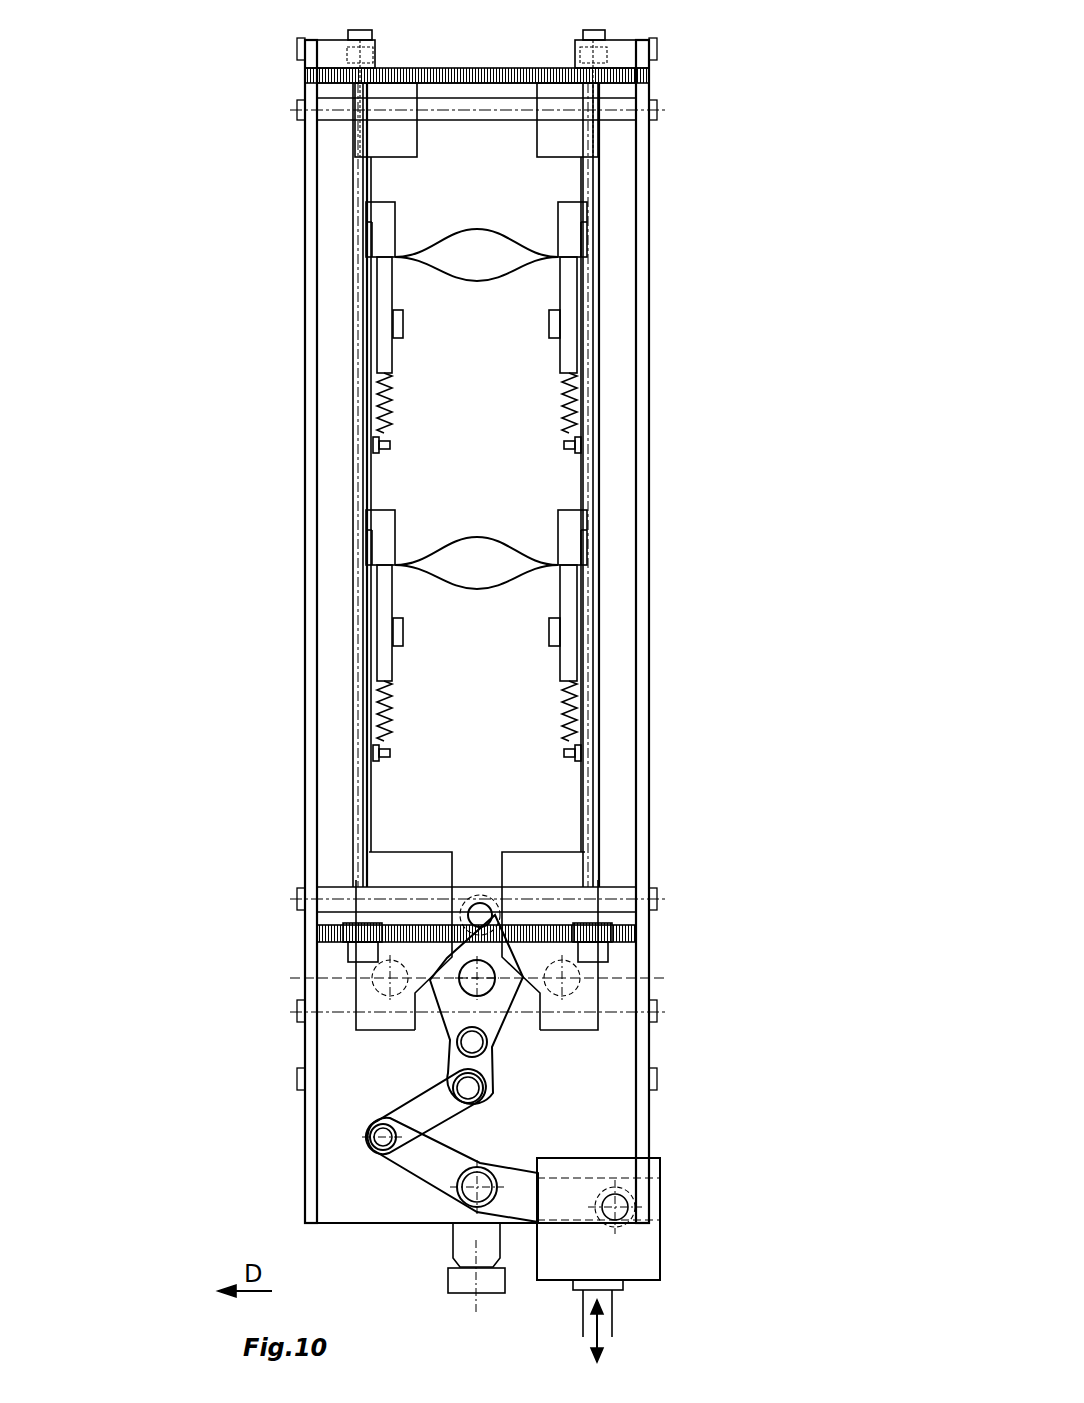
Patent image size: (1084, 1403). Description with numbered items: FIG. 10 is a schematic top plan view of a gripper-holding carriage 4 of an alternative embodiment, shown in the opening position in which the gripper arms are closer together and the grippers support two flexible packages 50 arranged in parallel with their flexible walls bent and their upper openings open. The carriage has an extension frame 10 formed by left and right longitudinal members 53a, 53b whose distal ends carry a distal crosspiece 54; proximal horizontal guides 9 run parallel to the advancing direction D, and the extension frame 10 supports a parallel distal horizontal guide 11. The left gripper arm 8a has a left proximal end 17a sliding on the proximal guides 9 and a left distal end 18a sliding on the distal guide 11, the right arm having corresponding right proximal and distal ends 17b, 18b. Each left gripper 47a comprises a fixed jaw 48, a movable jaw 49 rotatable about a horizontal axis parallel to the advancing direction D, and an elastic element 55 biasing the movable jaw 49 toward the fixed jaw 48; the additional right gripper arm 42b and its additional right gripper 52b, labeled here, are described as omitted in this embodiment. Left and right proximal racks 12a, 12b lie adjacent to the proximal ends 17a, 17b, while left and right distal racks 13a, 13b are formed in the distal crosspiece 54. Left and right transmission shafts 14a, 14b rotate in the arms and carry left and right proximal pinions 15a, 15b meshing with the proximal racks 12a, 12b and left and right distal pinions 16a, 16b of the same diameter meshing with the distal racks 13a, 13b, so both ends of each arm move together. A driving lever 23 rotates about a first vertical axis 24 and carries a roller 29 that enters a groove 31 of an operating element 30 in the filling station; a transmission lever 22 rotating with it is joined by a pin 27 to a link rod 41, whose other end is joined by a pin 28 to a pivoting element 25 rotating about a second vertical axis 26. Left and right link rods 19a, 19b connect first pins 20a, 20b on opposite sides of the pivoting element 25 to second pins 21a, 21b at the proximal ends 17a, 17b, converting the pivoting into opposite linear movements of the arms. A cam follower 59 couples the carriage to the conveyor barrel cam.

The gripper-holding carriage 4 is at (722, 246).
The left gripper arm 8a is at (375, 472).
The proximal horizontal guides 9 is at (640, 890).
The extension frame 10 is at (662, 490).
The distal horizontal guide 11 is at (492, 118).
The left proximal rack 12a is at (390, 925).
The right proximal rack 12b is at (560, 925).
The left distal rack 13a is at (390, 63).
The right distal rack 13b is at (565, 63).
The left transmission shaft 14a is at (360, 405).
The right transmission shaft 14b is at (590, 405).
The left proximal pinion 15a is at (330, 940).
The right proximal pinion 15b is at (615, 940).
The left distal pinion 16a is at (330, 72).
The right distal pinion 16b is at (630, 72).
The left proximal end 17a is at (400, 860).
The right proximal end 17b is at (558, 860).
The left distal end 18a is at (380, 135).
The right distal end 18b is at (565, 135).
The left link rod 19a is at (400, 1022).
The right link rod 19b is at (580, 1022).
The first pin 20a is at (486, 903).
The first pin 20b is at (490, 1045).
The second pin 21a is at (385, 980).
The second pin 21b is at (570, 980).
The transmission lever 22 is at (440, 1195).
The driving lever 23 is at (527, 1205).
The first vertical axis 24 is at (445, 1208).
The pivoting element 25 is at (455, 1050).
The second vertical axis 26 is at (440, 1000).
The pin 27 is at (368, 1142).
The pin 28 is at (486, 1092).
The roller 29 is at (632, 1208).
The operating element 30 is at (643, 1287).
The groove 31 is at (645, 1272).
The link rod 41 is at (520, 1105).
The additional right gripper arm 42b is at (578, 472).
The left gripper 47a is at (402, 266).
The fixed jaw 48 is at (390, 216).
The movable jaw 49 is at (380, 292).
The flexible packages 50 is at (475, 228).
The additional right gripper 52b is at (552, 266).
The left longitudinal member 53a is at (312, 712).
The right longitudinal member 53b is at (640, 712).
The distal crosspiece 54 is at (490, 70).
The elastic element 55 is at (392, 412).
The cam follower 59 is at (465, 1288).